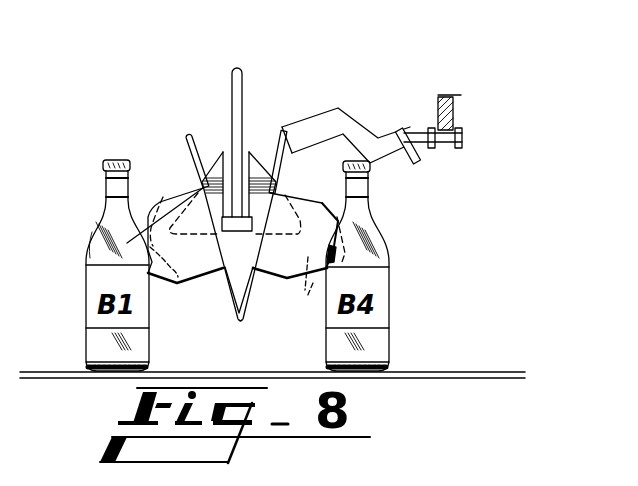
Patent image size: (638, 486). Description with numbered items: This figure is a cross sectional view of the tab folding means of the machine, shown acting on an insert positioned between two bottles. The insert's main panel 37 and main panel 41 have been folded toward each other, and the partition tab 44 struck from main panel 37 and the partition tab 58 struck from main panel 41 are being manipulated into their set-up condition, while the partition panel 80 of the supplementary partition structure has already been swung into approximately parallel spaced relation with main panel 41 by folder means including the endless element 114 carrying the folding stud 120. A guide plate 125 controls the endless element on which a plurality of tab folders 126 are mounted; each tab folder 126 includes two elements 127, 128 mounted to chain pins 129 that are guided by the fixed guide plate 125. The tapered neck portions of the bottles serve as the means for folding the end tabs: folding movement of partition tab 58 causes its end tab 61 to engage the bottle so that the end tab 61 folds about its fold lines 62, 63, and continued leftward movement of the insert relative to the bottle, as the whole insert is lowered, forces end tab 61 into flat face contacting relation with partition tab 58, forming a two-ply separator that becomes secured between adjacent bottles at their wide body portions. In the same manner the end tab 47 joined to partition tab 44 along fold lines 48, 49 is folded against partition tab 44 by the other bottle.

The main panel 37 is at (190, 134).
The main panel 41 is at (277, 140).
The partition tab 44 is at (295, 262).
The end tab 47 is at (304, 253).
The fold line 48 is at (323, 213).
The fold line 49 is at (283, 300).
The partition tab 58 is at (203, 264).
The end tab 61 is at (137, 215).
The fold line 62 is at (186, 283).
The fold line 63 is at (163, 197).
The partition panel 80 is at (327, 126).
The endless element 114 is at (462, 138).
The folding stud 120 is at (416, 128).
The guide plate 125 is at (245, 73).
The tab folder 126 is at (221, 98).
The tab folder element 127 is at (212, 160).
The tab folder element 128 is at (258, 165).
The chain pin 129 is at (236, 231).